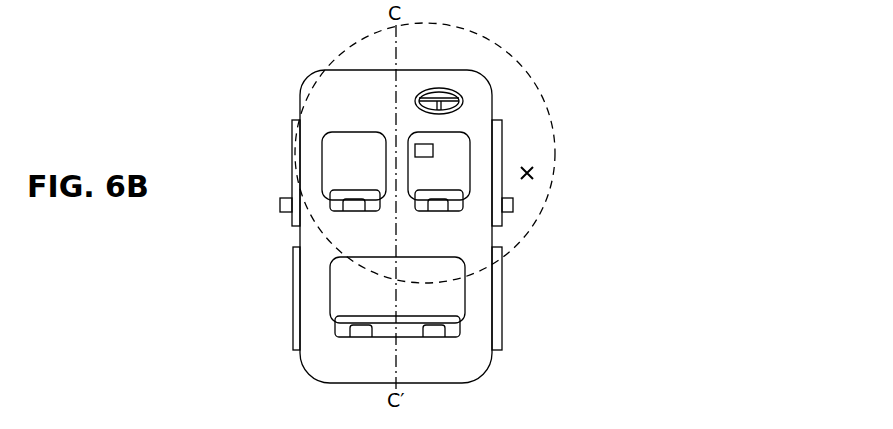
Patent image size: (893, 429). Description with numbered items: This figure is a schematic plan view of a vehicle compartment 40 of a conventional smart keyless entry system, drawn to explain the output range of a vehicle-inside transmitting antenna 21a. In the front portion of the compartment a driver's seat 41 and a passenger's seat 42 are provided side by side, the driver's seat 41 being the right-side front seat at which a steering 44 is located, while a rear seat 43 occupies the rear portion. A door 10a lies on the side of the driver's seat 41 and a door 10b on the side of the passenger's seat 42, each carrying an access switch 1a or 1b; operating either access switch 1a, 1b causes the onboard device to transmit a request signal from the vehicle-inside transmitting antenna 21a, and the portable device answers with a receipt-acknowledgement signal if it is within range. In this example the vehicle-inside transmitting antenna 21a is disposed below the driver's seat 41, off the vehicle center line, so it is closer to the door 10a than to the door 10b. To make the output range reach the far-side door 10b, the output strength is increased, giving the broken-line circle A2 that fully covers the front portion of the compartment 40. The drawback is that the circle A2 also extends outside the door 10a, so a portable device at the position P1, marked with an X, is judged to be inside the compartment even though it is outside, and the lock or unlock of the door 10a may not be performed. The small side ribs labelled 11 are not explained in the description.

The vehicle compartment 40 is at (477, 375).
The driver's seat 41 is at (462, 167).
The passenger's seat 42 is at (332, 168).
The rear seat 43 is at (340, 292).
The steering 44 is at (453, 89).
The door 10a is at (500, 133).
The door 10b is at (292, 135).
The rib 11 is at (293, 342).
The access switch 1a is at (513, 205).
The access switch 1b is at (280, 205).
The vehicle-inside transmitting antenna 21a is at (417, 144).
The position P1 is at (533, 172).
The circle A2 is at (538, 274).